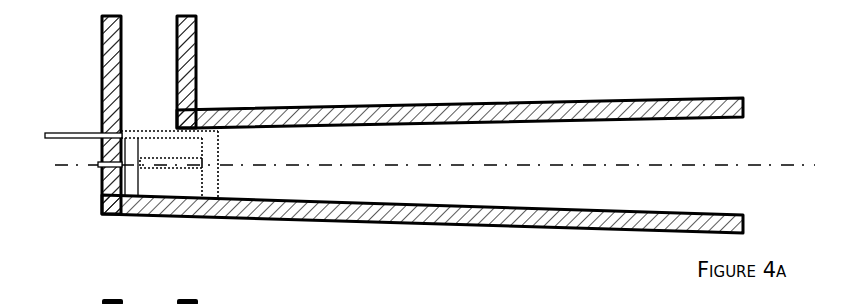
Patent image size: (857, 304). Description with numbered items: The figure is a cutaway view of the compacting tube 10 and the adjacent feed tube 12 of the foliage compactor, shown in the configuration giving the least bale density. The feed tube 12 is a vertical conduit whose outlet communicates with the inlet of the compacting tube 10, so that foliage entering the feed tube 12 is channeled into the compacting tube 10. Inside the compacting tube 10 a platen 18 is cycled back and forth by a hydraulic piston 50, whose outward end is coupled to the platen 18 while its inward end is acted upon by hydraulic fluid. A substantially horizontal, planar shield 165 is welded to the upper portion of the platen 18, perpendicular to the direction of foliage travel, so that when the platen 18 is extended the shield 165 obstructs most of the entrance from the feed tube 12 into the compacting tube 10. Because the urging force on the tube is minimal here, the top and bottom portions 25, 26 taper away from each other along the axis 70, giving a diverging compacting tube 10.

The compacting tube 10 is at (596, 151).
The feed tube 12 is at (143, 56).
The platen 18 is at (130, 192).
The top portion 25 is at (462, 102).
The bottom portion 26 is at (462, 226).
The hydraulic piston 50 is at (98, 170).
The axis 70 is at (431, 165).
The shield 165 is at (67, 133).